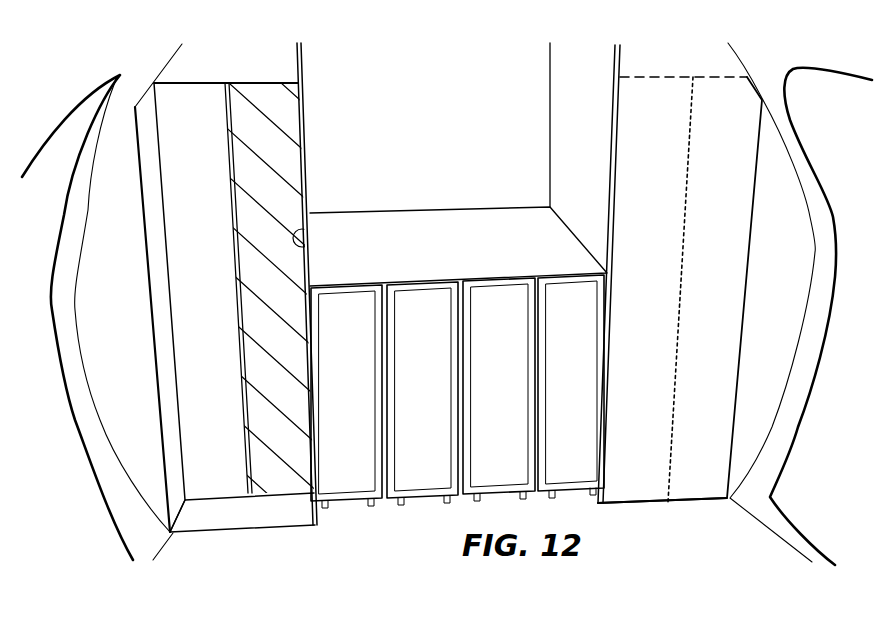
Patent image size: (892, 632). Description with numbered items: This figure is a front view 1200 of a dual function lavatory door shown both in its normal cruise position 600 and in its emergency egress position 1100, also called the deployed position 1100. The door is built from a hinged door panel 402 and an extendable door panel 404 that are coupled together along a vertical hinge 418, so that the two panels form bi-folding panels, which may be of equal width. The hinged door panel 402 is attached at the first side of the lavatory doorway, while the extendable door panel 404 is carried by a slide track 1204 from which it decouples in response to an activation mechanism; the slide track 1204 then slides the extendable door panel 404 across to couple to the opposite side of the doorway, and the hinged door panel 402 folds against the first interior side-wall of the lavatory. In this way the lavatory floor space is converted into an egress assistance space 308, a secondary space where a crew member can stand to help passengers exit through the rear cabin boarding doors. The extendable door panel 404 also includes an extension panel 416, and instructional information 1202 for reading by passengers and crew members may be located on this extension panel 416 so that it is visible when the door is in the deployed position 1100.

The egress assistance space 308 is at (188, 522).
The hinged door panel 402 is at (149, 126).
The extendable door panel 404 is at (179, 98).
The extension panel 416 is at (287, 141).
The vertical hinge 418 is at (682, 263).
The normal cruise position 600 is at (702, 512).
The emergency egress position 1100 is at (247, 537).
The front view 1200 is at (368, 74).
The instructional information 1202 is at (307, 212).
The slide track 1204 is at (667, 77).